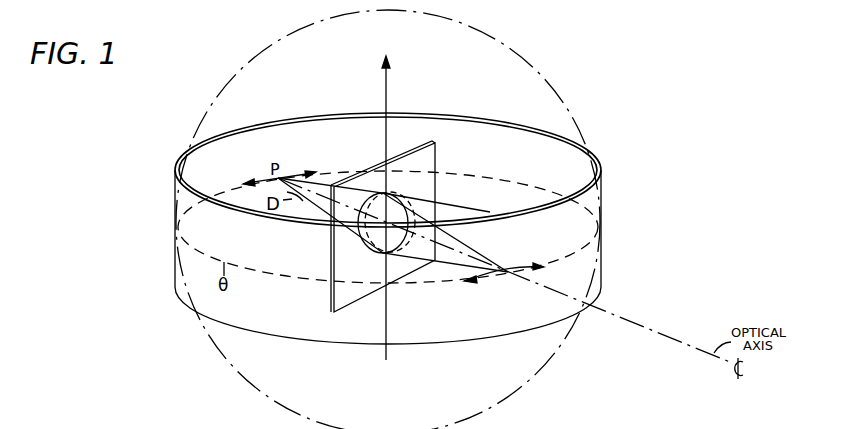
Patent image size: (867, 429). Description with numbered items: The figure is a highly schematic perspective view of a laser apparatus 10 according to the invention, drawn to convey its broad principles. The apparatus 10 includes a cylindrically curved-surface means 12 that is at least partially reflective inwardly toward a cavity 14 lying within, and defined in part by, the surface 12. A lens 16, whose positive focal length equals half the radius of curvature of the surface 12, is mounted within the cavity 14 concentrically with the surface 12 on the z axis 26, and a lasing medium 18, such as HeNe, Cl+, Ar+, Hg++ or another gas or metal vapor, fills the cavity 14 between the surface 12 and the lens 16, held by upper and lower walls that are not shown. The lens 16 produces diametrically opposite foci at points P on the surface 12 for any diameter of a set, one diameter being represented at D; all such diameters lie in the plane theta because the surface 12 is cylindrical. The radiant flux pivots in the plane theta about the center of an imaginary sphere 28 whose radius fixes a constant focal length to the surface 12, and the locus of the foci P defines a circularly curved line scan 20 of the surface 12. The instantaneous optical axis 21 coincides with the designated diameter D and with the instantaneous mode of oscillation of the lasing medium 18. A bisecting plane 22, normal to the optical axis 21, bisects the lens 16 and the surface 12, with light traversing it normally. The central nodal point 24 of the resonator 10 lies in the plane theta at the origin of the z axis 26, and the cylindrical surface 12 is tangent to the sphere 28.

The apparatus 10 is at (166, 249).
The cylindrically curved-surface means 12 is at (201, 152).
The cavity 14 is at (494, 208).
The lens 16 is at (398, 210).
The lasing medium 18 is at (324, 130).
The line scan 20 is at (494, 280).
The instantaneous optical axis 21 is at (626, 319).
The bisecting plane 22 is at (424, 163).
The central nodal point 24 is at (378, 224).
The z axis 26 is at (392, 88).
The sphere 28 is at (517, 53).